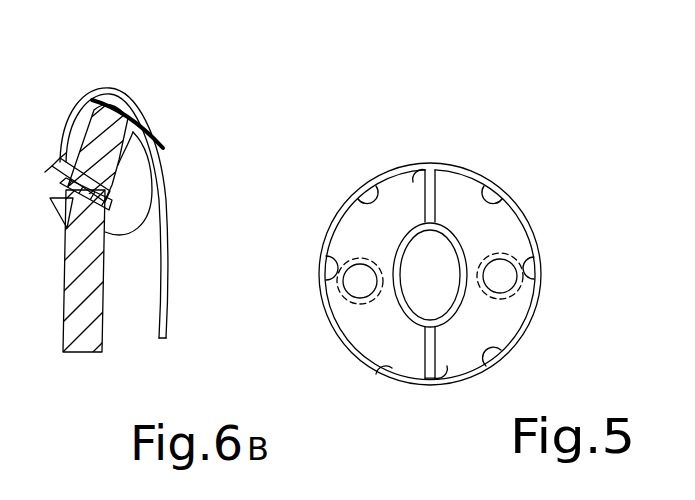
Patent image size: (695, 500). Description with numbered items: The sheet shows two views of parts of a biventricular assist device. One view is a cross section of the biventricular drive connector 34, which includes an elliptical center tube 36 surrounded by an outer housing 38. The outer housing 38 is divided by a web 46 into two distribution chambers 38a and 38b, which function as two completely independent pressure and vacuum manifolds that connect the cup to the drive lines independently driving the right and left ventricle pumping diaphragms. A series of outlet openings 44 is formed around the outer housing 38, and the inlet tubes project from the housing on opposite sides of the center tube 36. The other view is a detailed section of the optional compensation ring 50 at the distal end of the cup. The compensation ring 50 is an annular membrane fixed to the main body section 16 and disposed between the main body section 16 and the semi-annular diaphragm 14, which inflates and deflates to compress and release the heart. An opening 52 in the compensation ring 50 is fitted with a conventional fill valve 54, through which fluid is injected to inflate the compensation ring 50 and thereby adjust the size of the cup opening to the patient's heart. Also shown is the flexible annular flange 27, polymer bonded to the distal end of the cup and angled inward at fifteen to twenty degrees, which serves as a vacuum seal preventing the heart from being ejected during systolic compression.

In FIG. 6B, the semi-annular diaphragm 14 is at (167, 318).
In FIG. 6B, the main body section 16 is at (85, 333).
In FIG. 6B, the flexible annular flange 27 is at (145, 122).
In FIG. 6B, the compensation ring 50 is at (150, 126).
In FIG. 6B, the opening 52 is at (66, 260).
In FIG. 6B, the fill valve 54 is at (60, 162).
In FIG. 5, the biventricular drive connector 34 is at (556, 203).
In FIG. 5, the elliptical center tube 36 is at (458, 313).
In FIG. 5, the outer housing 38 is at (325, 218).
In FIG. 5, the distribution chamber 38a is at (360, 328).
In FIG. 5, the distribution chamber 38b is at (444, 180).
In FIG. 5, the outlet openings 44 is at (355, 203).
In FIG. 5, the web 46 is at (415, 180).